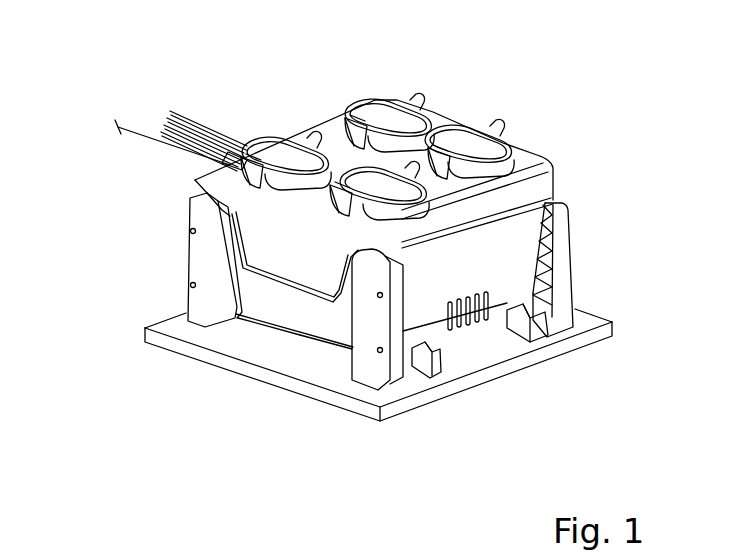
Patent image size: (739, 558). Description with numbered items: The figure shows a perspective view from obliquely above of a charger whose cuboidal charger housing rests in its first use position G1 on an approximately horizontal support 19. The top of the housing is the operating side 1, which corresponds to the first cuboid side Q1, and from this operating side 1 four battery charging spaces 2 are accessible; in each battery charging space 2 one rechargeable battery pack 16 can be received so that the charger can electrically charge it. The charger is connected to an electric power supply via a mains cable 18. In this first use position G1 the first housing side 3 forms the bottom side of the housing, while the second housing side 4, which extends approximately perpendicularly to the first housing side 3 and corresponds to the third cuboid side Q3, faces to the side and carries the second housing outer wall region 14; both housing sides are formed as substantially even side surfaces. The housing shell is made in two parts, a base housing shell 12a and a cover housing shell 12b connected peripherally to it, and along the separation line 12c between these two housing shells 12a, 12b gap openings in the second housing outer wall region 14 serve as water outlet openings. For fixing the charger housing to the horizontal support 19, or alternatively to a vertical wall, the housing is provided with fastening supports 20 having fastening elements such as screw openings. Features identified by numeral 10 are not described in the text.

The operating side 1 is at (323, 137).
The battery charging space 2 is at (276, 162).
The first housing side 3 is at (300, 298).
The second housing side 4 is at (273, 286).
The contact chamber 10 is at (365, 108).
The base housing shell 12a is at (447, 343).
The cover housing shell 12b is at (550, 172).
The separation line 12c is at (550, 198).
The second housing outer wall region 14 is at (320, 295).
The rechargeable battery pack 16 is at (243, 158).
The mains cable 18 is at (143, 140).
The horizontal support 19 is at (587, 345).
The fastening support 20 is at (188, 293).
The first cuboid side Q1 is at (447, 188).
The third cuboid side Q3 is at (333, 322).
The first use position G1 is at (353, 322).